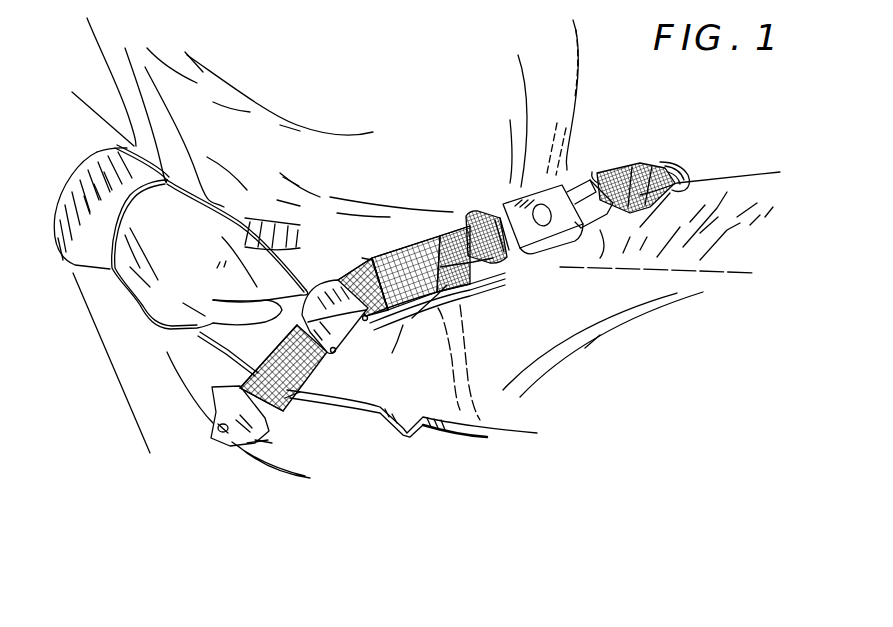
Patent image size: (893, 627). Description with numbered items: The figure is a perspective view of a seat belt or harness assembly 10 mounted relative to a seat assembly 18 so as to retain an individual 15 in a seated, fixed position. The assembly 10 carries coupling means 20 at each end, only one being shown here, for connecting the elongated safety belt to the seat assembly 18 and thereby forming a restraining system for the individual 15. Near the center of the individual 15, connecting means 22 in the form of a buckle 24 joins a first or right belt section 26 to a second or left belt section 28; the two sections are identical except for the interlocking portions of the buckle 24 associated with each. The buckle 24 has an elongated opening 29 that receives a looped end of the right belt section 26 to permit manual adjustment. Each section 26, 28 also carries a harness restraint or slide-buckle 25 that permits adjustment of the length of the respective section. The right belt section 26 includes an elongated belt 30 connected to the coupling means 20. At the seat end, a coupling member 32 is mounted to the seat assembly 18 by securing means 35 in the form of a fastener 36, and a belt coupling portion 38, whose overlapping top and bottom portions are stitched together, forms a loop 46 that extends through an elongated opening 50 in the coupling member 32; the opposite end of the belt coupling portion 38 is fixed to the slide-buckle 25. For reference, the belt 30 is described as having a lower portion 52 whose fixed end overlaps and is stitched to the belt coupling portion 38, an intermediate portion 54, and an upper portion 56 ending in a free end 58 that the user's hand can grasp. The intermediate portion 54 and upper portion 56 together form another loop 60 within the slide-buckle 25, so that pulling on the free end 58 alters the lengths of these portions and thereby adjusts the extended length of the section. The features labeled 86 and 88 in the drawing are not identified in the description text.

The seat belt assembly 10 is at (443, 233).
The individual 15 is at (578, 84).
The seat assembly 18 is at (123, 394).
The coupling means 20 is at (238, 446).
The connecting means 22 is at (546, 163).
The buckle 24 is at (578, 240).
The slide-buckle 25 is at (357, 337).
The first or right belt section 26 is at (468, 288).
The second or left belt section 28 is at (619, 180).
The elongated opening 29 is at (484, 212).
The elongated belt 30 is at (333, 395).
The coupling member 32 is at (268, 440).
The securing means 35 is at (212, 436).
The fastener 36 is at (218, 432).
The belt coupling portion 38 is at (286, 398).
The loop 46 is at (272, 443).
The elongated opening 50 is at (217, 388).
The lower portion 52 is at (409, 349).
The intermediate portion 54 is at (412, 318).
The upper portion 56 is at (392, 234).
The free end 58 is at (415, 234).
The loop 60 is at (484, 265).
The fastener 86 is at (374, 262).
The tab 88 is at (362, 258).